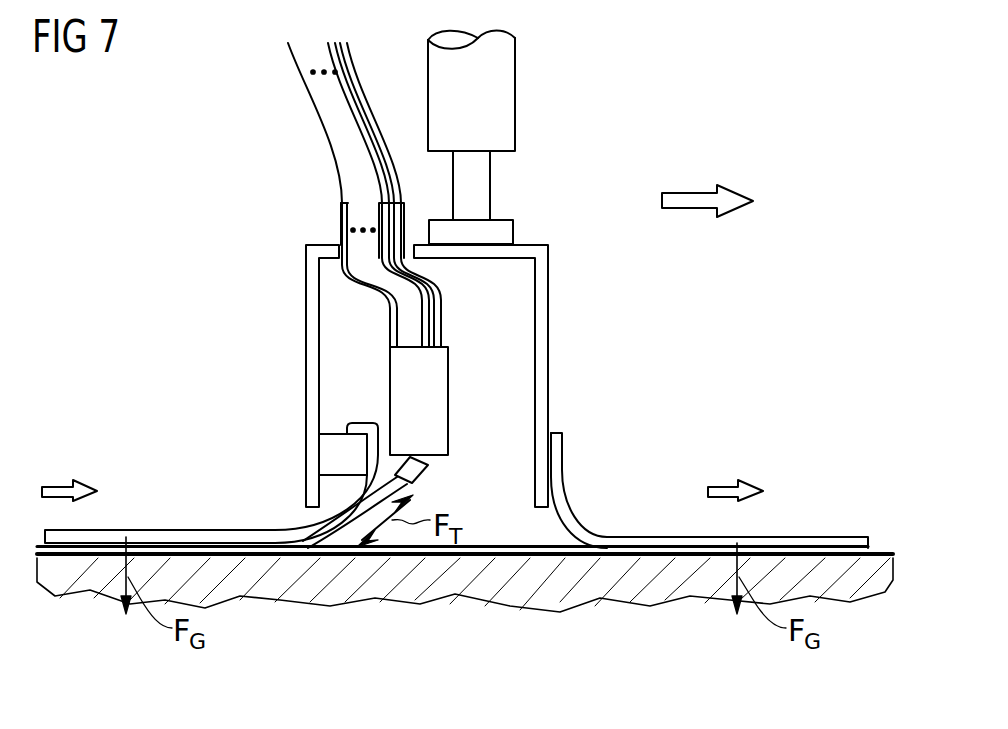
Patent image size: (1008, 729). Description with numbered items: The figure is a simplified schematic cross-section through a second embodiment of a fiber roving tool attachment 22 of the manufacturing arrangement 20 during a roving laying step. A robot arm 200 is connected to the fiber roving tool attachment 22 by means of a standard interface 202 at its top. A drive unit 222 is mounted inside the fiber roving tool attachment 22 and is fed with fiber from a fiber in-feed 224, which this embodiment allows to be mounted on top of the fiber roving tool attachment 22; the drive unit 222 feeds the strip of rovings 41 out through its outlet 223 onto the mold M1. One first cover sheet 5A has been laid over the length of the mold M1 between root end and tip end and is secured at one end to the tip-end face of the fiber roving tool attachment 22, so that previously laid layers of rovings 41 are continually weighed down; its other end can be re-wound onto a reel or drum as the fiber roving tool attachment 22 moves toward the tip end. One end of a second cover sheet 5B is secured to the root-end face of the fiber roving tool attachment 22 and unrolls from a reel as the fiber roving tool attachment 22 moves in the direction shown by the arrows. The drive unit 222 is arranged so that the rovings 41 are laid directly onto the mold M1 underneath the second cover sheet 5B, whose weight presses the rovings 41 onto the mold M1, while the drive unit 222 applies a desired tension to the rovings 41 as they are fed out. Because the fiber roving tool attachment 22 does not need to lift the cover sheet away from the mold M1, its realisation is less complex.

The laying head / applicator device 20 is at (653, 137).
The robot arm 200 is at (505, 92).
The standard interface 202 is at (503, 236).
The fiber roving tool attachment 22 is at (540, 318).
The drive unit 222 is at (440, 395).
The nozzle 223 is at (424, 472).
The fiber in-feed 224 is at (377, 208).
The rovings 41 is at (378, 137).
The second cover sheet 5B is at (210, 538).
The first cover sheet 5A is at (825, 545).
The mold M1 is at (608, 570).